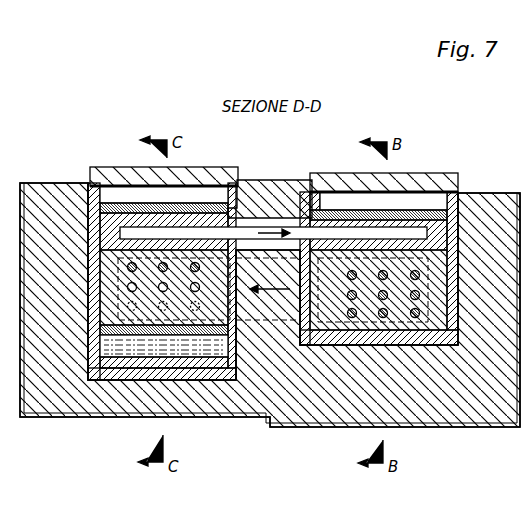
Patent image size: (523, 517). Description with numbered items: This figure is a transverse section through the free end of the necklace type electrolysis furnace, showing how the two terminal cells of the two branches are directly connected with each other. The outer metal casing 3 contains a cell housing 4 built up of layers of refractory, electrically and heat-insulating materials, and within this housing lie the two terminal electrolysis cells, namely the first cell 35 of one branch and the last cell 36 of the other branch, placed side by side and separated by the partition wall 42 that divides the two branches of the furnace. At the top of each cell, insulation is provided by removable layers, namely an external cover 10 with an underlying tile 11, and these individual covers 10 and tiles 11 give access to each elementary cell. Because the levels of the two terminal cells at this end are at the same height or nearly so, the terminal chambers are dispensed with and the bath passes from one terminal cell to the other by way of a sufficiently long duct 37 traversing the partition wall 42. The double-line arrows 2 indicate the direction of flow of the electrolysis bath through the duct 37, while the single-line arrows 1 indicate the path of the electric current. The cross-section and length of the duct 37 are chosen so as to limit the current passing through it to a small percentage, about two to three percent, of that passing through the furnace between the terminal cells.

The single-line arrows 1 is at (280, 290).
The double-line arrows 2 is at (267, 227).
The metal casing 3 is at (447, 425).
The cell housing 4 is at (92, 403).
The external covers 10 is at (227, 168).
The tiles 11 is at (187, 202).
The first cell 35 is at (360, 205).
The last cell 36 is at (118, 193).
The duct 37 is at (242, 237).
The partition wall 42 is at (293, 197).